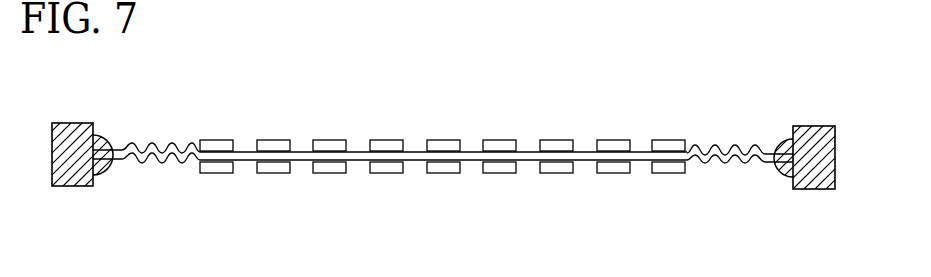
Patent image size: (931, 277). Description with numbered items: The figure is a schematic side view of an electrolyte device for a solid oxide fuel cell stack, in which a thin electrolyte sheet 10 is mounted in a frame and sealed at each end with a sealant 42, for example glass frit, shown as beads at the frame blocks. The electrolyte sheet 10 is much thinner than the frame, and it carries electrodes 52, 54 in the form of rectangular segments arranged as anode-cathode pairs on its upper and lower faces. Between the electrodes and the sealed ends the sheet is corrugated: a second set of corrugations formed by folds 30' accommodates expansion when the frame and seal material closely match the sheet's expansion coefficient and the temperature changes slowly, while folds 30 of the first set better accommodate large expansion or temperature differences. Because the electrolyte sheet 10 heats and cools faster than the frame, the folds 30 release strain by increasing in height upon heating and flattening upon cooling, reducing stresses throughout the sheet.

The electrolyte sheet 10 is at (115, 161).
The folds 30 is at (765, 119).
The folds 30' is at (433, 99).
The sealant 42 is at (96, 142).
The electrodes (anode-cathode pairs) 52 is at (272, 139).
The electrodes (anode-cathode pairs) 54 is at (328, 173).